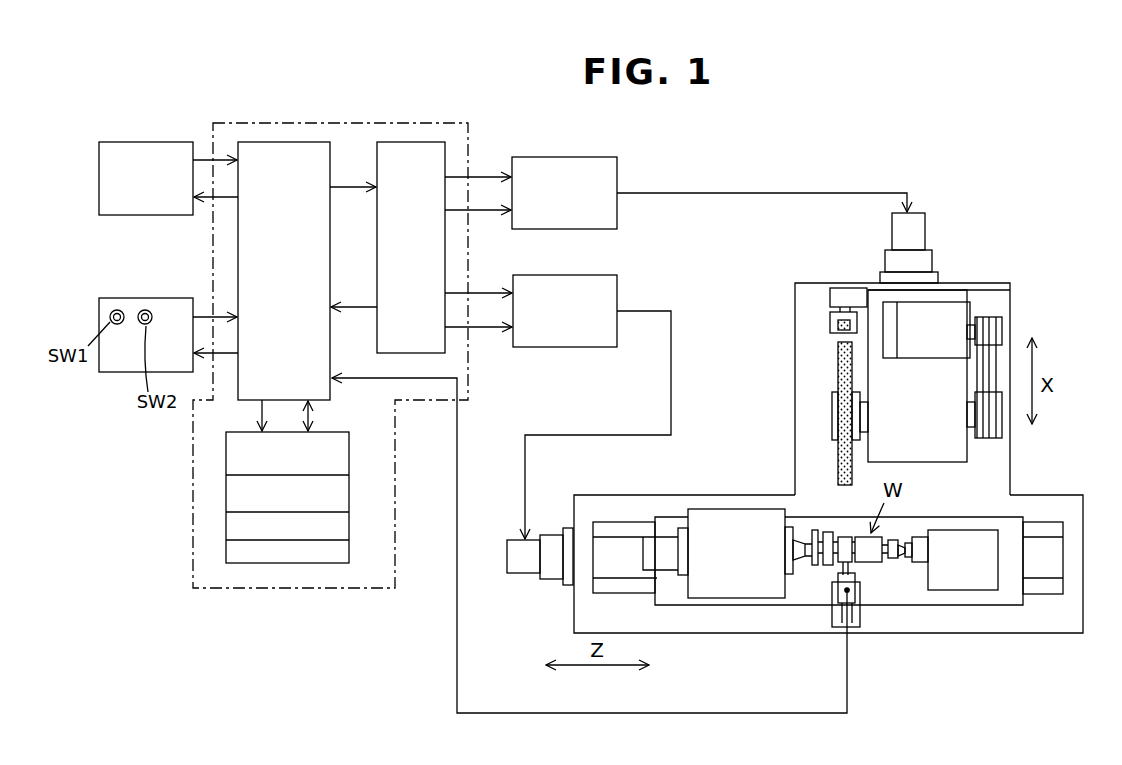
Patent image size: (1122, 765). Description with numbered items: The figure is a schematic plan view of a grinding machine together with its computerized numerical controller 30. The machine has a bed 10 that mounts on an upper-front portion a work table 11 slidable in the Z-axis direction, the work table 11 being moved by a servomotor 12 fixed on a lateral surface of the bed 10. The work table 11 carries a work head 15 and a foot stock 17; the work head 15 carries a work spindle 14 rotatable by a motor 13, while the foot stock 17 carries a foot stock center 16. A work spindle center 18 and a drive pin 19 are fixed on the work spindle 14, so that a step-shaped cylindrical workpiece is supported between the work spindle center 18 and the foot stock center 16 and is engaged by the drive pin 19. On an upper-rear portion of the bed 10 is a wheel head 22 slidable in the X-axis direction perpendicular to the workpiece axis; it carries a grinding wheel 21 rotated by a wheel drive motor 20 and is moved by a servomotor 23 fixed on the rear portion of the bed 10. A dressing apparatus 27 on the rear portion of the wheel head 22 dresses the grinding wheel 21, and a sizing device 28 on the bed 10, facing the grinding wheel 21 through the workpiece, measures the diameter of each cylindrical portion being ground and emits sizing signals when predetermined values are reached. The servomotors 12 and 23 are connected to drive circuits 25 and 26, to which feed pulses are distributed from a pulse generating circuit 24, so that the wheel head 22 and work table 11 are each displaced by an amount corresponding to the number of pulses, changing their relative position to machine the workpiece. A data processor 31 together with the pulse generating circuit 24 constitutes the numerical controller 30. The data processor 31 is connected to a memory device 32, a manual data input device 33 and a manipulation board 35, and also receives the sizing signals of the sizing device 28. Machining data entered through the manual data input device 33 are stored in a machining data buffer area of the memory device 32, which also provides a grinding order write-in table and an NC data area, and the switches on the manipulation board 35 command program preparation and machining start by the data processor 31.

The bed 10 is at (1072, 512).
The work table 11 is at (1010, 526).
The servomotor 12 is at (525, 575).
The motor 13 is at (667, 540).
The work spindle 14 is at (790, 577).
The work head 15 is at (722, 592).
The foot stock center 16 is at (910, 560).
The foot stock 17 is at (975, 584).
The work spindle center 18 is at (796, 552).
The drive pin 19 is at (797, 525).
The wheel drive motor 20 is at (950, 308).
The grinding wheel 21 is at (838, 352).
The wheel head 22 is at (945, 455).
The servomotor 23 is at (921, 242).
The pulse generating circuit 24 is at (445, 270).
The drive circuit 25 is at (617, 175).
The drive circuit 26 is at (617, 290).
The dressing apparatus 27 is at (820, 310).
The sizing device 28 is at (852, 588).
The numerical controller 30 is at (470, 135).
The data processor 31 is at (330, 152).
The memory device 32 is at (351, 461).
The manual data input device 33 is at (158, 145).
The manipulation board 35 is at (160, 298).